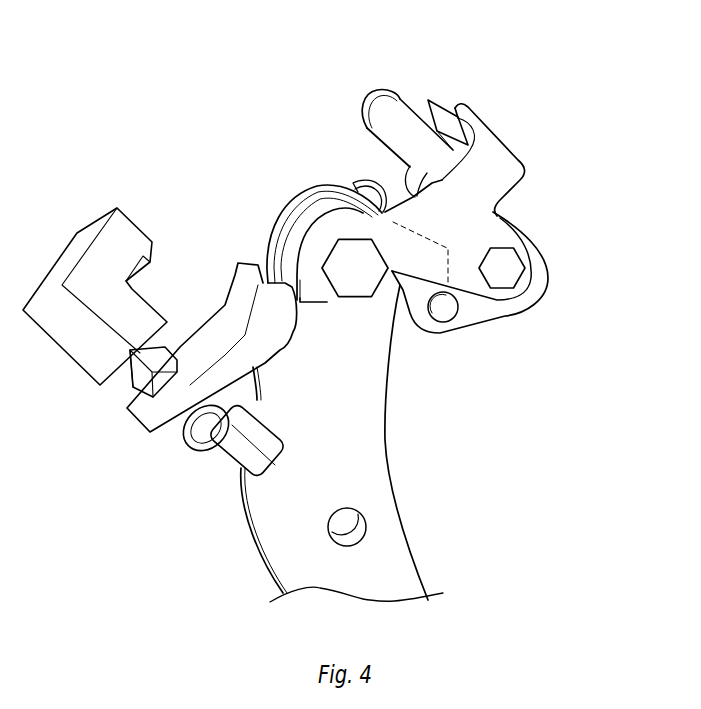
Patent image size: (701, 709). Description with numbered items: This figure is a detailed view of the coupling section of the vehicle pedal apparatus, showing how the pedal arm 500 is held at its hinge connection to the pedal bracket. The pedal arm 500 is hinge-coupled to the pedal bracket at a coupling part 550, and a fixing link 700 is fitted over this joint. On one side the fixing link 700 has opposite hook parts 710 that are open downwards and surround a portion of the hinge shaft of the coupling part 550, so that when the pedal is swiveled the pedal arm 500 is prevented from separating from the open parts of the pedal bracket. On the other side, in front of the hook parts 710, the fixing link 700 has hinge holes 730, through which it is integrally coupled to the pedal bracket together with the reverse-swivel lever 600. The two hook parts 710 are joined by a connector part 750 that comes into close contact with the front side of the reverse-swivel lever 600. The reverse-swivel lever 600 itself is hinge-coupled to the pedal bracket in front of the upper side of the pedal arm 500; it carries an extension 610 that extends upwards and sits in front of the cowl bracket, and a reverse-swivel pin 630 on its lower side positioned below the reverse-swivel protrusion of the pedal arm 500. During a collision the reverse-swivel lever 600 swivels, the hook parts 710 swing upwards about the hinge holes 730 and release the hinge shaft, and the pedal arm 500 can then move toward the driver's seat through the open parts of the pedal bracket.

The pedal arm 500 is at (387, 562).
The coupling part 550 is at (362, 300).
The reverse-swivel lever 600 is at (541, 212).
The extension 610 is at (385, 112).
The reverse-swivel pin 630 is at (445, 308).
The fixing link 700 is at (513, 141).
The hook parts 710 is at (327, 231).
The hinge holes 730 is at (512, 268).
The connector part 750 is at (460, 120).